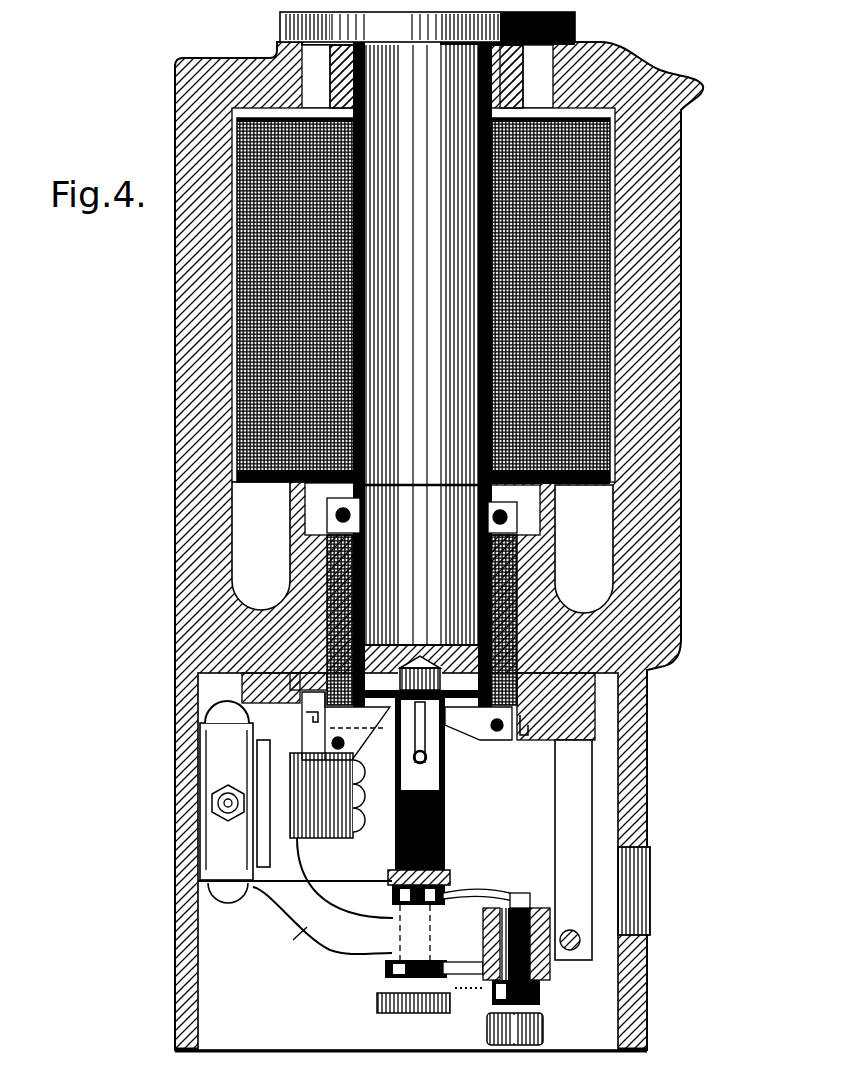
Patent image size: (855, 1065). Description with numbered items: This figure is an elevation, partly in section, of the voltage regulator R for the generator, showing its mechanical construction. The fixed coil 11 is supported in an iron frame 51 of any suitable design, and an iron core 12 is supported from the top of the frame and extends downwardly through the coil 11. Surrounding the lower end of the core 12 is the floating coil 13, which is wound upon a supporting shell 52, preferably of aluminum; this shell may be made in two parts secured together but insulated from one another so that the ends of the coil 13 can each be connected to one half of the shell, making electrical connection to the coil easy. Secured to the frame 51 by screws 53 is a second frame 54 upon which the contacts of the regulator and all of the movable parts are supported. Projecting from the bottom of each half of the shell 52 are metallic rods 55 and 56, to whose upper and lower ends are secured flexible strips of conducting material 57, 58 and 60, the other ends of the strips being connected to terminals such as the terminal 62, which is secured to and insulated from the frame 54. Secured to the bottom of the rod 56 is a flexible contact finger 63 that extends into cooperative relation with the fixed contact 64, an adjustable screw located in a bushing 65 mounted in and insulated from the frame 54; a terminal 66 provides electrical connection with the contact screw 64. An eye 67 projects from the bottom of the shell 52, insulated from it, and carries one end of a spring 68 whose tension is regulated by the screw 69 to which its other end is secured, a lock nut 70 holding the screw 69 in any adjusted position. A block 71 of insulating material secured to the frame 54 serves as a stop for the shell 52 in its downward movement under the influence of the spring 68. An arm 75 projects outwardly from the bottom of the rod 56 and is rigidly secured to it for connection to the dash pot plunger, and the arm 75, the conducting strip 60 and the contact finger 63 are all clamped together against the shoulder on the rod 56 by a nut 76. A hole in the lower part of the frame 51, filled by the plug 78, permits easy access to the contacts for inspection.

The voltage regulator R is at (132, 313).
The fixed coil 11 is at (240, 437).
The iron core 12 is at (427, 359).
The floating coil 13 is at (512, 577).
The iron frame 51 is at (449, 546).
The supporting shell 52 is at (335, 525).
The screws 53 is at (528, 735).
The frame 54 is at (322, 926).
The metallic rod 55 is at (440, 769).
The metallic rod 56 is at (400, 836).
The flexible strip of conducting material 57 is at (271, 701).
The flexible strip of conducting material 58 is at (349, 728).
The flexible strip of conducting material 60 is at (345, 878).
The terminal 62 is at (215, 830).
The flexible contact finger 63 is at (490, 882).
The fixed contact 64 is at (523, 897).
The bushing 65 is at (552, 975).
The terminal 66 is at (470, 990).
The eye 67 is at (440, 752).
The spring 68 is at (445, 804).
The screw 69 is at (396, 983).
The lock nut 70 is at (388, 965).
The block of insulating material 71 is at (331, 838).
The arm 75 is at (447, 882).
The nut 76 is at (444, 897).
The plug 78 is at (652, 893).